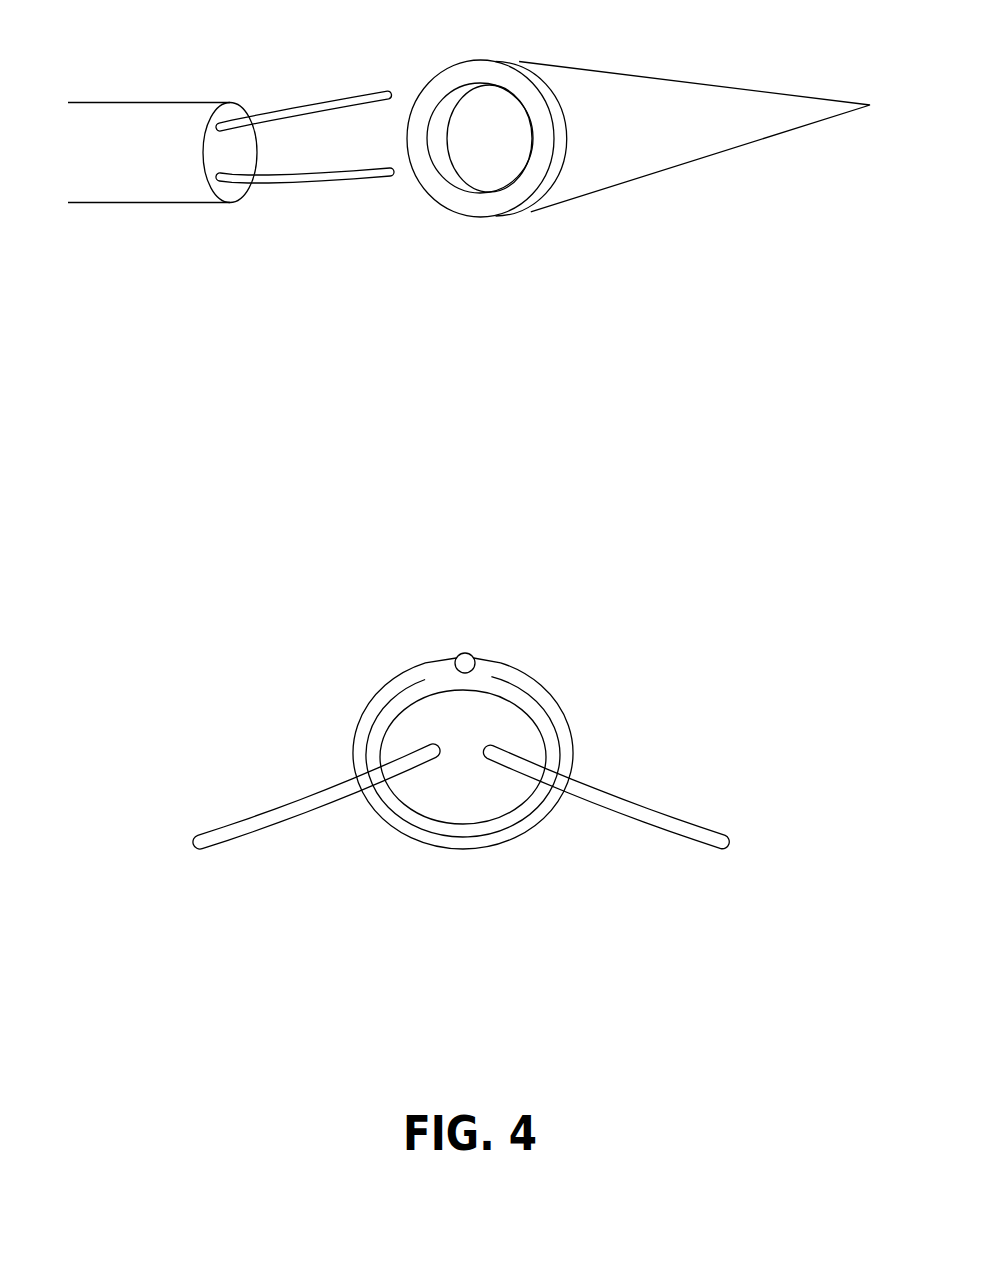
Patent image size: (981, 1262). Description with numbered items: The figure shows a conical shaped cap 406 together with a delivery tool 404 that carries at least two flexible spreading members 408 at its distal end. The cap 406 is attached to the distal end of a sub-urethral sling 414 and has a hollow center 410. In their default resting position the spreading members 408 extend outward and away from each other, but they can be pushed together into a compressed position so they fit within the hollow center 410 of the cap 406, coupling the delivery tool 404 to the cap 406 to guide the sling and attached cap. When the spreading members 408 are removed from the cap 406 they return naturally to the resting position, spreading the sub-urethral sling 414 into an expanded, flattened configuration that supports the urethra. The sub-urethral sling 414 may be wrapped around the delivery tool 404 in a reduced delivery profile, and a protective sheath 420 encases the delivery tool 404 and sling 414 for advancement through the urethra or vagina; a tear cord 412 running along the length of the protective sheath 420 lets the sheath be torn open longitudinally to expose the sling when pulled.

The delivery tool 404 is at (187, 93).
The conical shaped cap 406 is at (655, 72).
The flexible spreading members 408 is at (388, 93).
The hollow center 410 is at (503, 137).
The tear cord 412 is at (460, 653).
The sub-urethral sling 414 is at (550, 742).
The protective sheath 420 is at (537, 675).